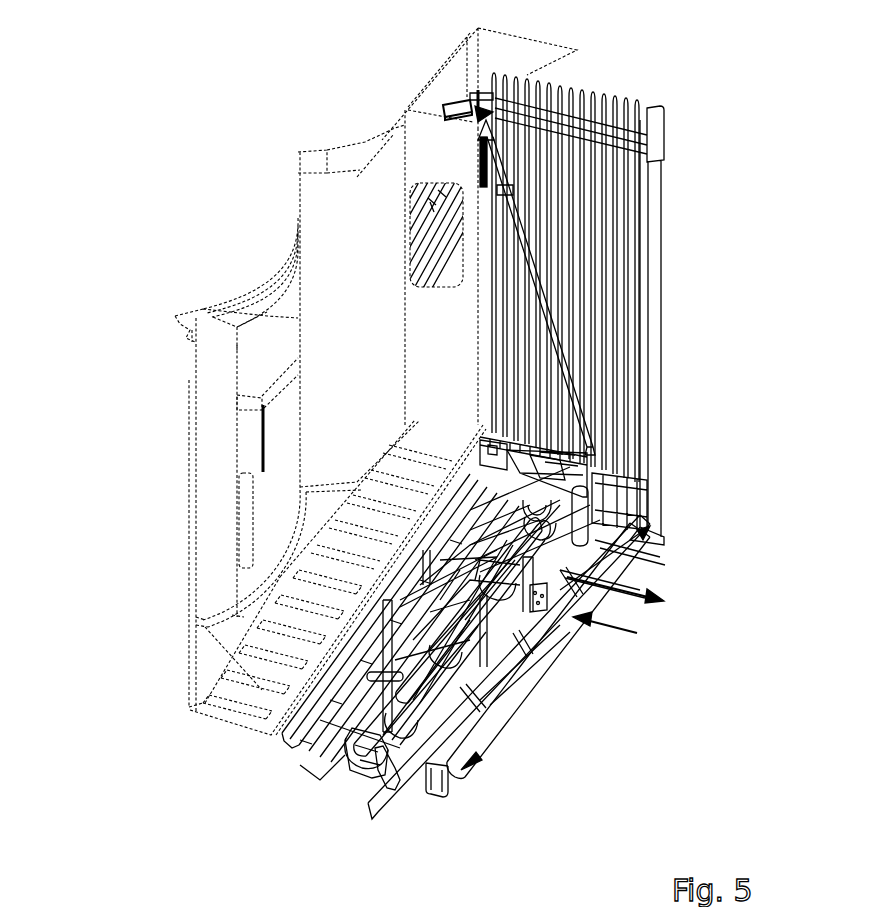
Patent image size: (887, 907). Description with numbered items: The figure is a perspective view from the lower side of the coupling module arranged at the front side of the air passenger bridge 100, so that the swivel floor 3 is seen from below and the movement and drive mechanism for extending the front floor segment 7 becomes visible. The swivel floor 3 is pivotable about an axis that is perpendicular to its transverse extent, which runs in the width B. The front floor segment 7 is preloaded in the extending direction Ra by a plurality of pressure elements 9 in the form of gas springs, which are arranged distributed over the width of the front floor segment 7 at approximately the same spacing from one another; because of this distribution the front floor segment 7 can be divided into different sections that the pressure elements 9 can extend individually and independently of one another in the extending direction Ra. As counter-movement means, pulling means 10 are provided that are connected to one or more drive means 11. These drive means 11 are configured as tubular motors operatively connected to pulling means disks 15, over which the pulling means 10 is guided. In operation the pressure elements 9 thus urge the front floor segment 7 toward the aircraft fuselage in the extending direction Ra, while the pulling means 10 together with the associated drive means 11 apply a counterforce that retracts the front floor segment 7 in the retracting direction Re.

The air passenger bridge 100 is at (205, 538).
The swivel floor 3 is at (590, 452).
The front floor segment 7 is at (537, 610).
The pressure element 9 is at (340, 737).
The pulling means 10 is at (440, 790).
The drive means 11 is at (413, 738).
The pulling means disk 15 is at (357, 760).
The width B is at (527, 693).
The extending direction Ra is at (626, 600).
The retracting direction Re is at (606, 630).